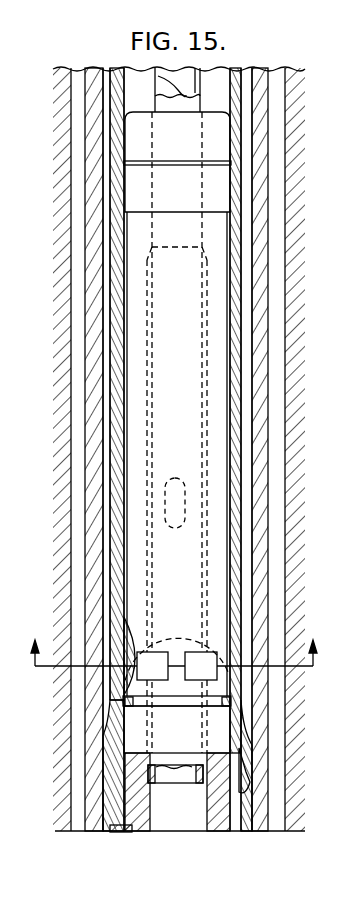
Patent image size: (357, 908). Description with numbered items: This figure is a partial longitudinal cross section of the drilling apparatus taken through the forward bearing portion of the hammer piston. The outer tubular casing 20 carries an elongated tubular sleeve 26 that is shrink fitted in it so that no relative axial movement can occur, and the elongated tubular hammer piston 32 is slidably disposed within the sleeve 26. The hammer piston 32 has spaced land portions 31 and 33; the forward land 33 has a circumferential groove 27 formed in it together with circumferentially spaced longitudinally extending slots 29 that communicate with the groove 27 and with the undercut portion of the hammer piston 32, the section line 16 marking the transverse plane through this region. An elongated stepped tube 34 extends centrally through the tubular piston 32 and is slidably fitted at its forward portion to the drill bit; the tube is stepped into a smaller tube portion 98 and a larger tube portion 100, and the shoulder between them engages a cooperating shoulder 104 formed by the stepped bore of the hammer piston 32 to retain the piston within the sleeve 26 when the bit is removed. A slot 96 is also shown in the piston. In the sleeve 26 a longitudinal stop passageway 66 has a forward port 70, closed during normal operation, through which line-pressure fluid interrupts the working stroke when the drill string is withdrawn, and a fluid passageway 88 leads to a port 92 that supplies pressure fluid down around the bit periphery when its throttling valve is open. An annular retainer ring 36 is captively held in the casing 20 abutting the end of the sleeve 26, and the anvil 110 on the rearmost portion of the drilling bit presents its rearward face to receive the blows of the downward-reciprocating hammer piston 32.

The section line 16 is at (170, 638).
The tubular casing 20 is at (92, 167).
The tubular sleeve 26 is at (118, 204).
The circumferential groove 27 is at (197, 688).
The longitudinally extending slots 29 is at (180, 658).
The land portion 31 is at (130, 128).
The hammer piston 32 is at (220, 272).
The forward land 33 is at (218, 730).
The stepped tube 34 is at (198, 93).
The annular retainer ring 36 is at (118, 831).
The stop passageway 66 is at (108, 507).
The port 70 is at (123, 703).
The fluid passageway 88 is at (245, 202).
The port 92 is at (250, 778).
The slot 96 is at (177, 478).
The smaller tube portion 98 is at (177, 96).
The larger tube portion 100 is at (174, 780).
The shoulder 104 is at (152, 248).
The anvil 110 is at (140, 798).